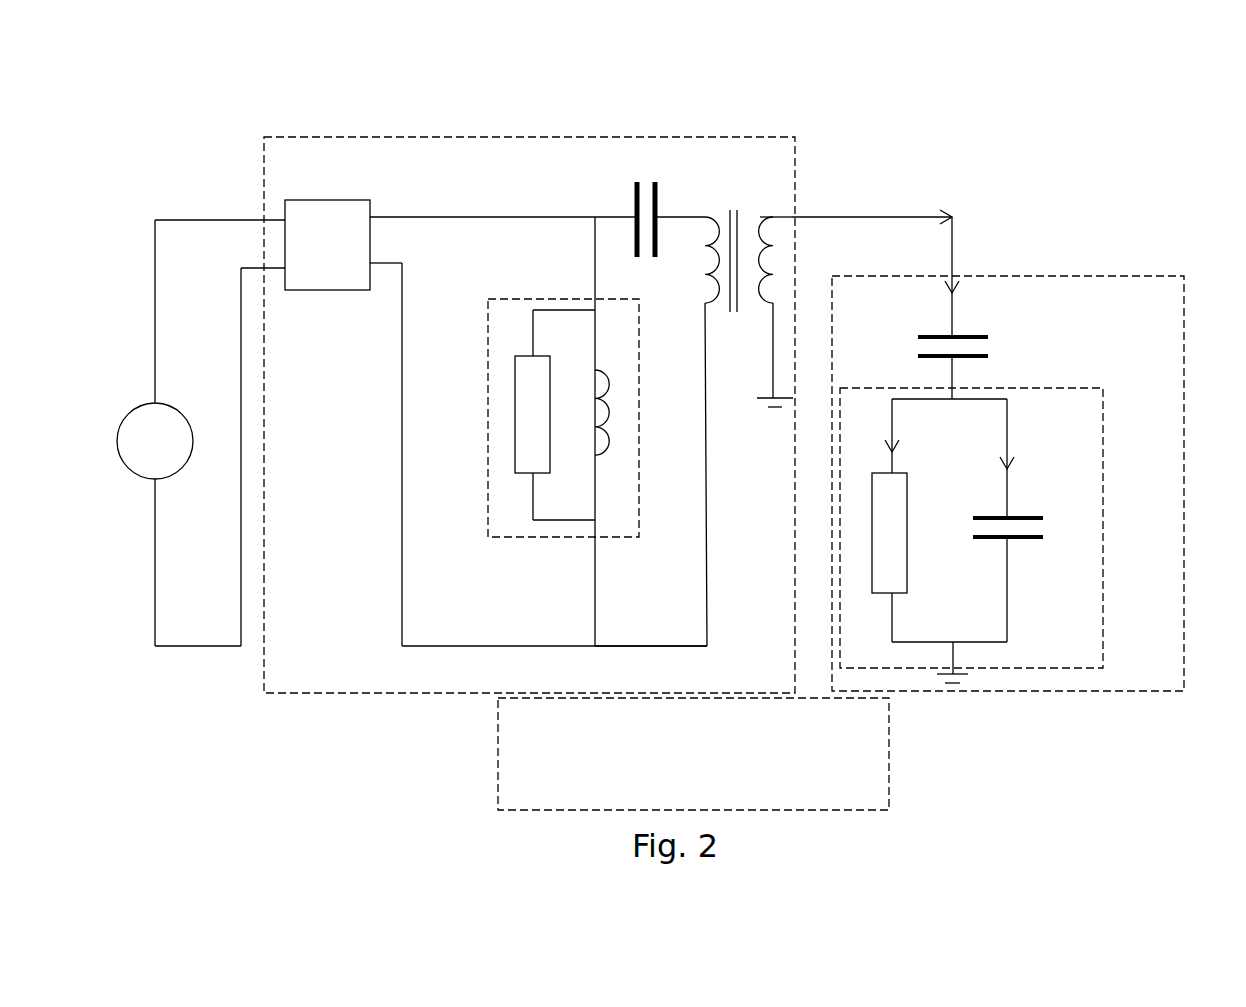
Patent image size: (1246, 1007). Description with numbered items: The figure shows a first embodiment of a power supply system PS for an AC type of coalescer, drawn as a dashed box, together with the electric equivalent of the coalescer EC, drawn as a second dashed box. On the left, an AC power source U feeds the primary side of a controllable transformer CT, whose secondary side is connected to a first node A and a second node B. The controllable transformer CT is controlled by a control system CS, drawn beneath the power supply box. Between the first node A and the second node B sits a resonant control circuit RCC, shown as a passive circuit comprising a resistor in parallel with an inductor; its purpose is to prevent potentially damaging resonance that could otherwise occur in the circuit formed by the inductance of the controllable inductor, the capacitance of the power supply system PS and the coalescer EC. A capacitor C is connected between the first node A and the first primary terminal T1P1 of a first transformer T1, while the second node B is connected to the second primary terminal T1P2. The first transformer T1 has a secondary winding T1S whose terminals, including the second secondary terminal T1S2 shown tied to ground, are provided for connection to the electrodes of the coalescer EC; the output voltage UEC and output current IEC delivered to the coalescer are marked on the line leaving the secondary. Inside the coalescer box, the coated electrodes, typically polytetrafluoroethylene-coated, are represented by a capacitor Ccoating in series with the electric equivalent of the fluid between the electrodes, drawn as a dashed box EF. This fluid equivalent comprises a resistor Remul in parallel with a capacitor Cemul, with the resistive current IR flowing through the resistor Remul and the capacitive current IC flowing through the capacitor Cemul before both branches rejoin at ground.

The power supply system PS is at (328, 142).
The AC power source U is at (186, 433).
The controllable transformer CT is at (335, 210).
The first node A is at (503, 416).
The second node B is at (643, 661).
The capacitor C is at (663, 198).
The resonant control circuit RCC is at (523, 537).
The first transformer T1 is at (723, 400).
The first primary terminal T1P1 is at (695, 246).
The second primary terminal T1P2 is at (680, 474).
The secondary winding T1S is at (772, 246).
The second secondary terminal T1S2 is at (762, 355).
The cell voltage UEC is at (872, 191).
The cell current IEC is at (930, 260).
The coalescer EC is at (1163, 285).
The coating capacitor Ccoating is at (991, 368).
The electric equivalent of the fluid EF is at (1103, 460).
The resistive current IR is at (871, 436).
The emulsion resistor Remul is at (919, 557).
The capacitive current IC is at (1018, 458).
The emulsion capacitor Cemul is at (1016, 580).
The control system CS is at (693, 754).